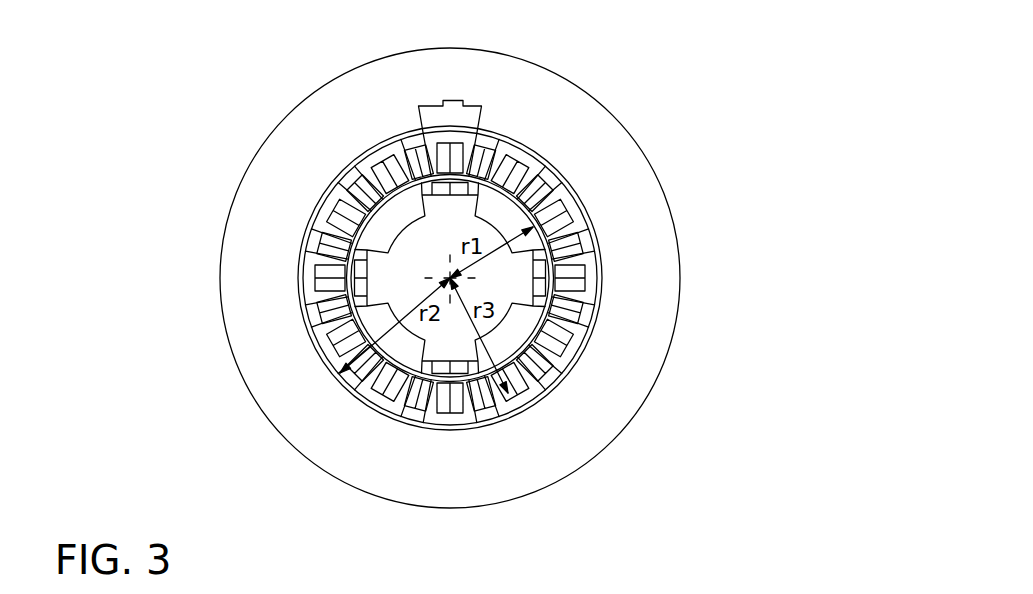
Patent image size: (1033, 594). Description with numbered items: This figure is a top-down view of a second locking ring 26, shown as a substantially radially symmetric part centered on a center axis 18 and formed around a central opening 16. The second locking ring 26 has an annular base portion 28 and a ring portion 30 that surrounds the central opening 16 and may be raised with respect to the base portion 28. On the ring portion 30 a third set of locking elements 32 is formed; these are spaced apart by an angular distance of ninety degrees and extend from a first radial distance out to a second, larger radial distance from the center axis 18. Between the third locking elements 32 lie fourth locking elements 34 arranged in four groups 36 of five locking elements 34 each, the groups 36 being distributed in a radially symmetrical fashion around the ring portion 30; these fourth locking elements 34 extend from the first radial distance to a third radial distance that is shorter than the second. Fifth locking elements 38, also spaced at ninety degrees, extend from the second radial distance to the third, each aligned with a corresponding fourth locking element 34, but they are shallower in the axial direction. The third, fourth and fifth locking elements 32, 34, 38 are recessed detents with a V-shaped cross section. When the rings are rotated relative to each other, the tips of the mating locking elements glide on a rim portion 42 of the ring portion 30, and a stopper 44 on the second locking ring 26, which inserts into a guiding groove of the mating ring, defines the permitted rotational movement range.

The central opening 16 is at (406, 290).
The center axis 18 is at (450, 278).
The second locking ring 26 is at (727, 142).
The annular base portion 28 is at (593, 443).
The ring portion 30 is at (453, 284).
The third locking elements 32 is at (408, 137).
The fourth locking elements 34 is at (549, 184).
The groups 36 is at (488, 141).
The fifth locking elements 38 is at (527, 148).
The rim portion 42 is at (347, 368).
The stopper 44 is at (432, 108).